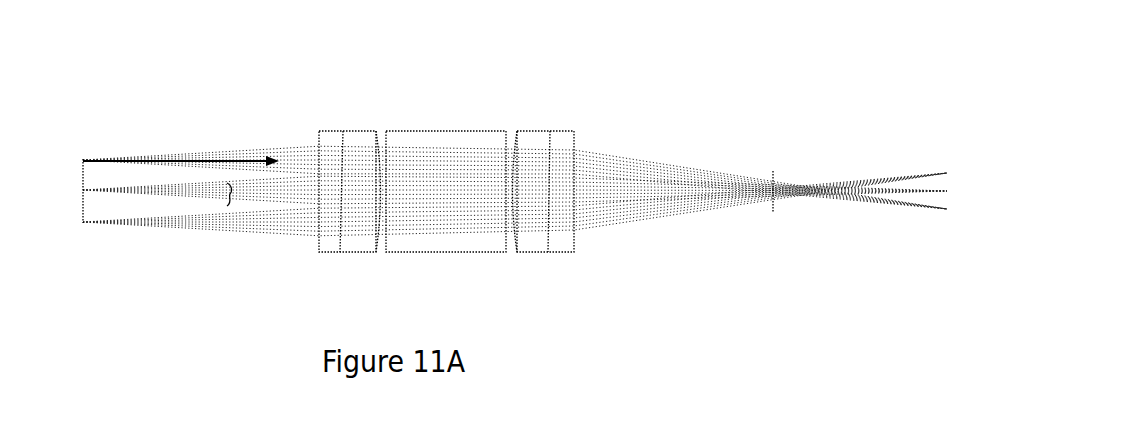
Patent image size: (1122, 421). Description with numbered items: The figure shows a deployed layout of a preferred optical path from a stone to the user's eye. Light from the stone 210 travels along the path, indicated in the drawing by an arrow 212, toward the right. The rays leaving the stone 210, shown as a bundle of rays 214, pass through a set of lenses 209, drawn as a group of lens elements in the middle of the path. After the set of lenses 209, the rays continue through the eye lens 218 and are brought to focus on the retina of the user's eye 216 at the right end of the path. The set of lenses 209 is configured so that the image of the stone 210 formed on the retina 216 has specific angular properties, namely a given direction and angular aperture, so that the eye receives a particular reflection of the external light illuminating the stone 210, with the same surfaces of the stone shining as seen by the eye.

The set of lenses 209 is at (470, 262).
The stone 210 is at (80, 190).
The propagation direction arrow 212 is at (191, 152).
The ray bundle 214 is at (228, 210).
The retina of the user's eye 216 is at (943, 166).
The eye lens 218 is at (773, 213).